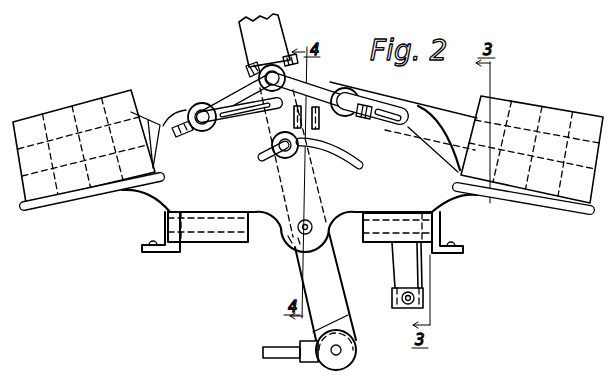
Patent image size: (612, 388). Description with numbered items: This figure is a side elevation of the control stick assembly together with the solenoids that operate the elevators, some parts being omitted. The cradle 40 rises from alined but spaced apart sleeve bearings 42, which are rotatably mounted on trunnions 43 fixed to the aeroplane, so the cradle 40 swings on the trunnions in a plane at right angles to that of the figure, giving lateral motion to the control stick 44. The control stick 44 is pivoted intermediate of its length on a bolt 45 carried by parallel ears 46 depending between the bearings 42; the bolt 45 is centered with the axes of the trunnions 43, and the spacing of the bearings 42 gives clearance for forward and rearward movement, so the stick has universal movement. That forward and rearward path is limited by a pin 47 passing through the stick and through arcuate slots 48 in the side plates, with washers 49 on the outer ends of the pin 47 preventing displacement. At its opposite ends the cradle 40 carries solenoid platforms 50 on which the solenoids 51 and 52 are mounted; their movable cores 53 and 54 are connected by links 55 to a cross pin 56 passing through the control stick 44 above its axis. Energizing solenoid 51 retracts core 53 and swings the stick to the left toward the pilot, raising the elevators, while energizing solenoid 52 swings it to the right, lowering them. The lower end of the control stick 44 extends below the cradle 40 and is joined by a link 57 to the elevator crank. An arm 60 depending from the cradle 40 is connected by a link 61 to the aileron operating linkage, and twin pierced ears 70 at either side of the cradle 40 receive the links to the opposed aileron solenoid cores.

The cradle 40 is at (176, 190).
The sleeve bearings 42 is at (237, 230).
The trunnions 43 is at (172, 238).
The control stick 44 is at (306, 276).
The bolt 45 is at (299, 236).
The parallel ears 46 is at (290, 238).
The pin 47 is at (273, 160).
The arcuate slots 48 is at (356, 154).
The washers 49 is at (272, 145).
The solenoid platforms 50 is at (84, 204).
The solenoid 51 is at (87, 110).
The solenoid 52 is at (556, 118).
The movable core 53 is at (159, 124).
The movable core 54 is at (447, 120).
The links 55 is at (244, 89).
The cross pin 56 is at (282, 63).
The link 57 is at (290, 332).
The arm 60 is at (405, 270).
The link 61 is at (425, 298).
The twin pierced ears 70 is at (321, 119).